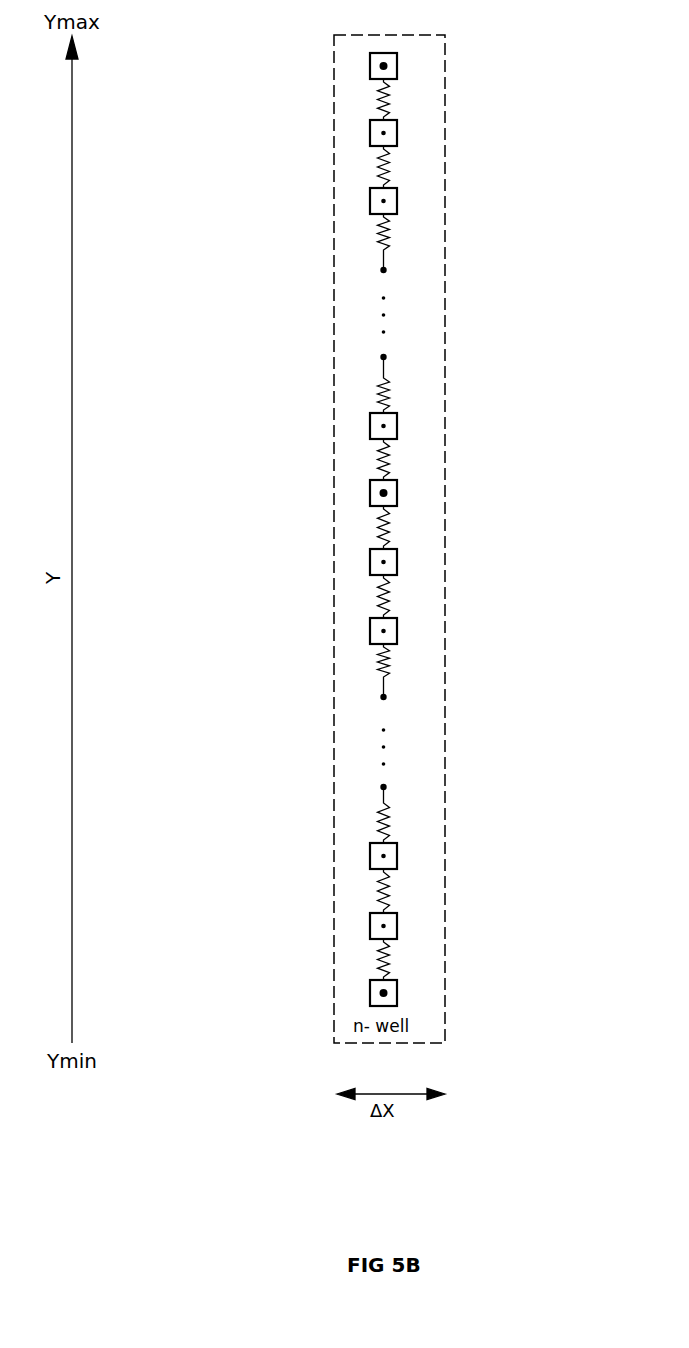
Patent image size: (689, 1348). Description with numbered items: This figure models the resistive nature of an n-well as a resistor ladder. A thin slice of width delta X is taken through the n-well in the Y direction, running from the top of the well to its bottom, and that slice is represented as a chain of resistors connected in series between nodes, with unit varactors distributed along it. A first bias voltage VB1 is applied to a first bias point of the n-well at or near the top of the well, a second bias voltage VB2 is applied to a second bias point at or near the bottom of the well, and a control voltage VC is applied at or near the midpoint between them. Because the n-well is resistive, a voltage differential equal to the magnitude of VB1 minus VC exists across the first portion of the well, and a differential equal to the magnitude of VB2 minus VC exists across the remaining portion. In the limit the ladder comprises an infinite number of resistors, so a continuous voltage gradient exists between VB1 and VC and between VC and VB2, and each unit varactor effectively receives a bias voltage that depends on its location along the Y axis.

The first bias voltage VB1 is at (387, 66).
The control voltage VC is at (387, 493).
The second bias voltage VB2 is at (387, 993).